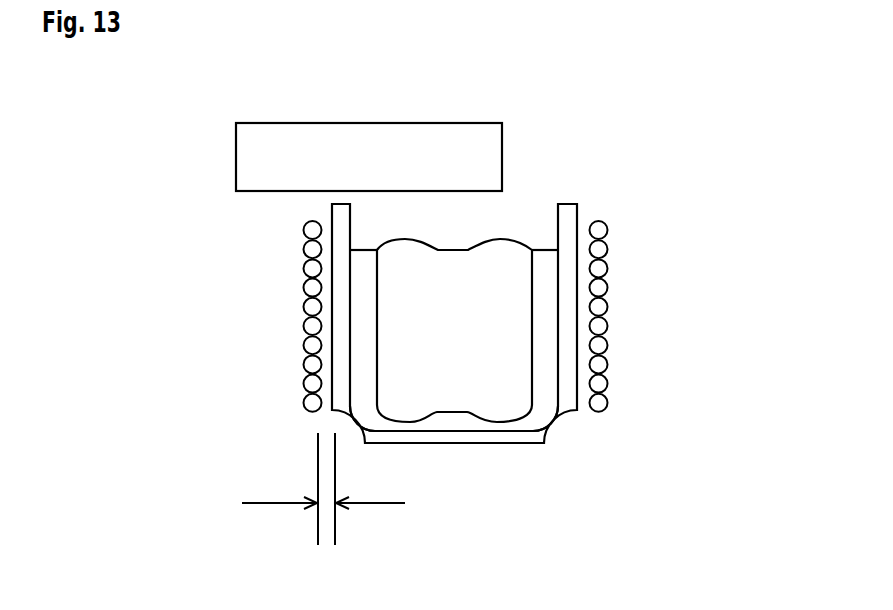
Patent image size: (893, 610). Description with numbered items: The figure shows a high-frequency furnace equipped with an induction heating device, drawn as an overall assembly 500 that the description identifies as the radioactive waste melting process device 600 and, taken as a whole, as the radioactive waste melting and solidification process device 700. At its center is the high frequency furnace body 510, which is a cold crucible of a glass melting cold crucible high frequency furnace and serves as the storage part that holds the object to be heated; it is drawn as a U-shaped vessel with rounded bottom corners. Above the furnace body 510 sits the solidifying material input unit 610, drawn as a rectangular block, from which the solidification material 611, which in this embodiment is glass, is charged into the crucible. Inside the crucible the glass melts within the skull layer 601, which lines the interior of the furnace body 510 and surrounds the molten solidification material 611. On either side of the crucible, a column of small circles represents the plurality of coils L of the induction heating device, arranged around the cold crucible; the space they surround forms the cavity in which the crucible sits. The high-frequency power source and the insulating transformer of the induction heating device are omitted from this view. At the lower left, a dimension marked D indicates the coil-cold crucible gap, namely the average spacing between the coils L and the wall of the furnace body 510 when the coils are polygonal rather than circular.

The crucible assembly 500 is at (297, 114).
The radioactive waste melting process device 600 is at (435, 329).
The radioactive waste melting and solidification process device 700 is at (473, 329).
The solidifying material input unit 610 is at (369, 157).
The high frequency furnace body 510 is at (577, 204).
The skull layer 601 is at (547, 412).
The solidification material 611 is at (458, 404).
The coil L is at (610, 243).
The coil-cold crucible gap D is at (306, 489).